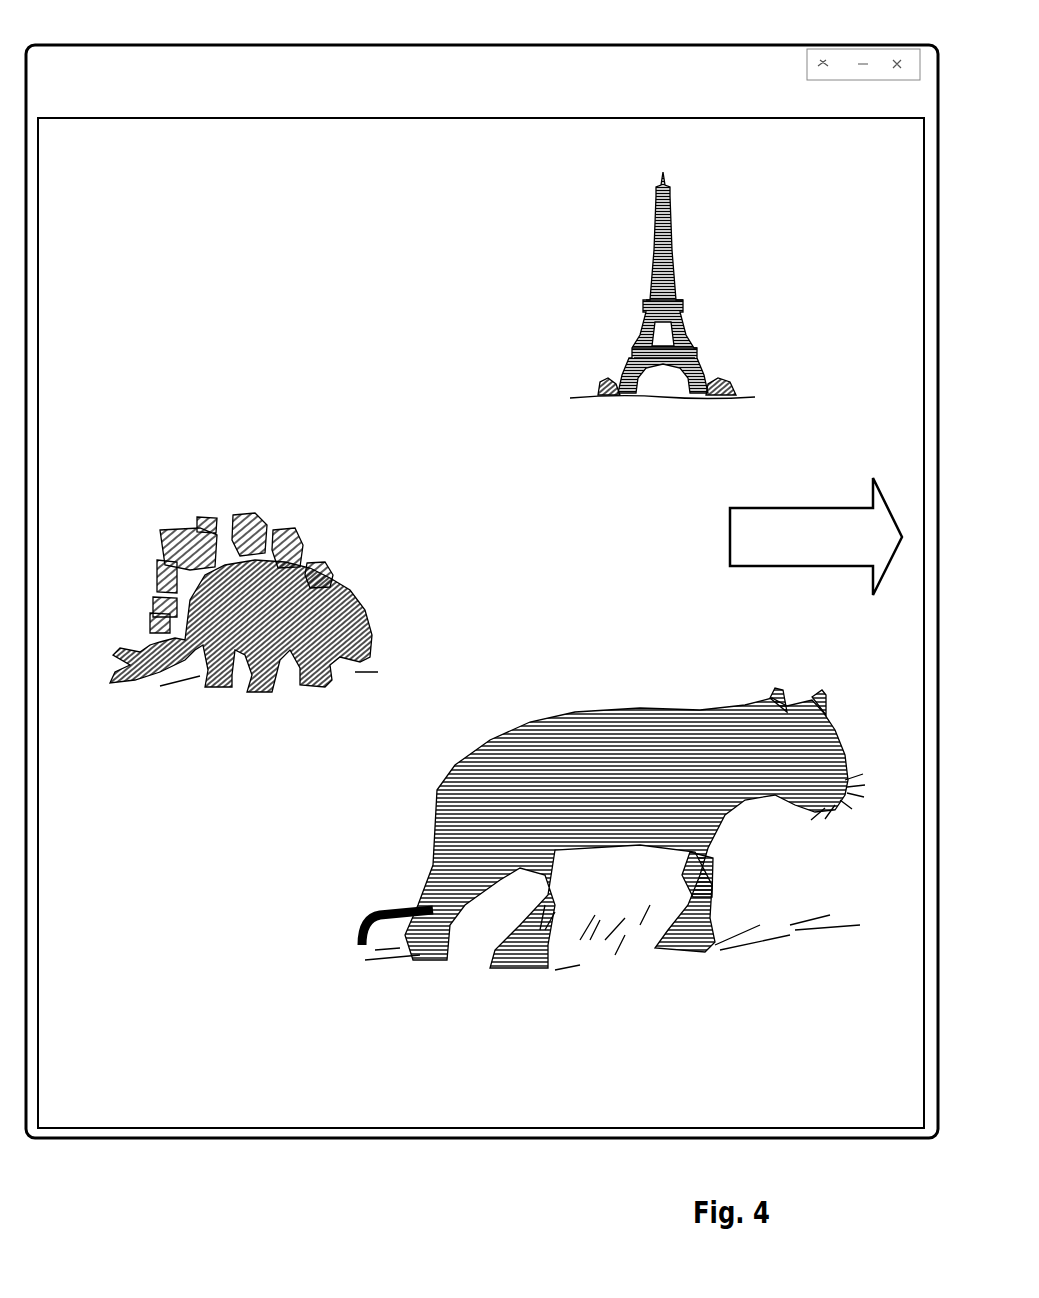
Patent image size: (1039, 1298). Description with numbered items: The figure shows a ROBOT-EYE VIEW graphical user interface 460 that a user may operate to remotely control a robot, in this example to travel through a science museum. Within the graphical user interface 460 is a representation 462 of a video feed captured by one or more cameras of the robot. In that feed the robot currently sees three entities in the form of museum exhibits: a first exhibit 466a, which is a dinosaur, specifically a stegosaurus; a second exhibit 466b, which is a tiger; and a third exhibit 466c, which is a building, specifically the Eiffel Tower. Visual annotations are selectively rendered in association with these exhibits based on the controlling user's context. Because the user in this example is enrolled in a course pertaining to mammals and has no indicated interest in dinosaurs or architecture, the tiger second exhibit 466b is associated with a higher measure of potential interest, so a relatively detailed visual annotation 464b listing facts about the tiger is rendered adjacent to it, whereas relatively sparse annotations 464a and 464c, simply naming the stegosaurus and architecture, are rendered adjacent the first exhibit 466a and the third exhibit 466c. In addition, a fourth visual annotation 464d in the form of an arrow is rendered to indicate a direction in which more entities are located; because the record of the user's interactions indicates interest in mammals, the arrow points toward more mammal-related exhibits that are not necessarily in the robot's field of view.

The graphical user interface 460 is at (575, 45).
The representation of a video feed 462 is at (398, 198).
The visual annotation 464a is at (148, 441).
The visual annotation 464b is at (268, 930).
The visual annotation 464c is at (462, 240).
The fourth visual annotation 464d is at (717, 498).
The first exhibit 466a is at (300, 548).
The second exhibit 466b is at (617, 711).
The third exhibit 466c is at (692, 347).